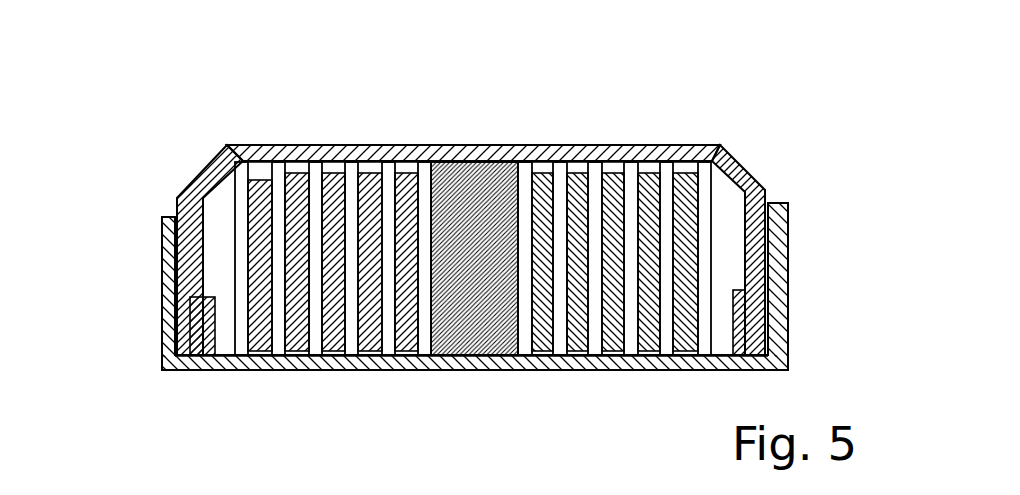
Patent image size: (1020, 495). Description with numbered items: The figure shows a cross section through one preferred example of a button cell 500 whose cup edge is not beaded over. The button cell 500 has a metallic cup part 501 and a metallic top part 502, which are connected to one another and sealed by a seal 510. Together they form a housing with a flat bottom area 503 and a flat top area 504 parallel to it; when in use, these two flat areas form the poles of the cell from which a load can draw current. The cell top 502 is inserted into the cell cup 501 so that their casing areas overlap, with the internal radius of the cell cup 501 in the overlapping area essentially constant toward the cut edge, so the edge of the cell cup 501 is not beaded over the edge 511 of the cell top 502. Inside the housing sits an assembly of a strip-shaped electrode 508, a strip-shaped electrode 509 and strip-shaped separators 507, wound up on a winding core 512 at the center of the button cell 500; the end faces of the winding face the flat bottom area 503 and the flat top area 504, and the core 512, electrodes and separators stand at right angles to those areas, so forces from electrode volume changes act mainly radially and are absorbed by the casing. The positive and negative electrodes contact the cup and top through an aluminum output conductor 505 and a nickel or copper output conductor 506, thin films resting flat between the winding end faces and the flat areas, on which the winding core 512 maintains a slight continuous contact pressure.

The button cell 500 is at (731, 93).
The cup part 501 is at (163, 252).
The top part 502 is at (217, 163).
The flat bottom area 503 is at (348, 369).
The flat top area 504 is at (390, 147).
The output conductor 505 is at (600, 369).
The output conductor 506 is at (262, 175).
The separators 507 is at (250, 369).
The electrode 508 is at (580, 150).
The electrode 509 is at (648, 170).
The seal 510 is at (747, 323).
The edge of the cell top 511 is at (760, 160).
The winding core 512 is at (463, 369).